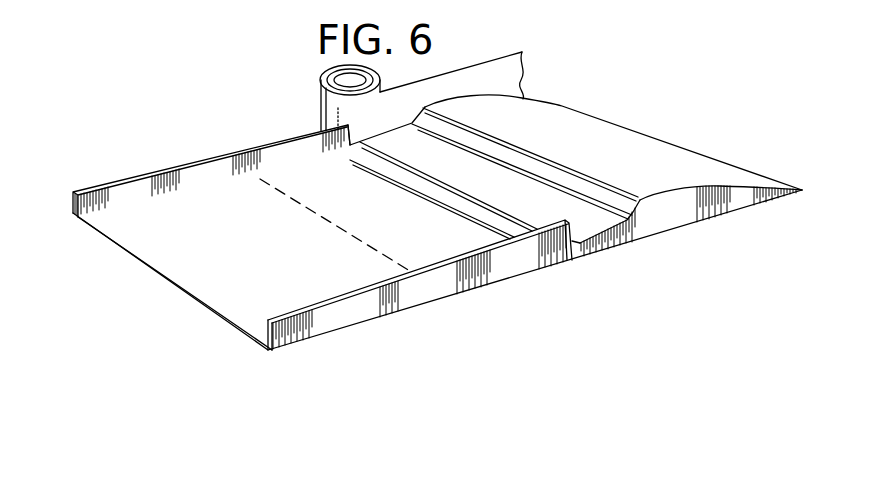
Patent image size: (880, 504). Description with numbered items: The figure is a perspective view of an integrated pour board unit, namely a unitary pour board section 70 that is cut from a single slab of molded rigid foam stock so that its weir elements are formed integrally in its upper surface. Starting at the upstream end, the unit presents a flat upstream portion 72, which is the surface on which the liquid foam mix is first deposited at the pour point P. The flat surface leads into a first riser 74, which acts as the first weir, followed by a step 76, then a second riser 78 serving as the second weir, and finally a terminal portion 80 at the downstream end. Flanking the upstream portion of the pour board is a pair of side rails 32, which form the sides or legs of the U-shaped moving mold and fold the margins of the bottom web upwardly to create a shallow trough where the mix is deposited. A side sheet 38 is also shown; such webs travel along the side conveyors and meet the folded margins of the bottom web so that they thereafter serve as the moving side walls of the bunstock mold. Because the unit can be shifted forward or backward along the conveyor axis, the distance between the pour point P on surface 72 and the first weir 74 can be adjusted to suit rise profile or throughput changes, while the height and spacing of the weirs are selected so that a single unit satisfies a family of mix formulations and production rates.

The unitary pour board section 70 is at (146, 278).
The side rails 32 is at (192, 163).
The side sheets 38 is at (319, 108).
The flat upstream portion 72 is at (265, 256).
The first riser 74 is at (383, 165).
The step 76 is at (440, 164).
The second riser 78 is at (514, 161).
The terminal portion 80 is at (643, 160).
The pour point P is at (347, 229).